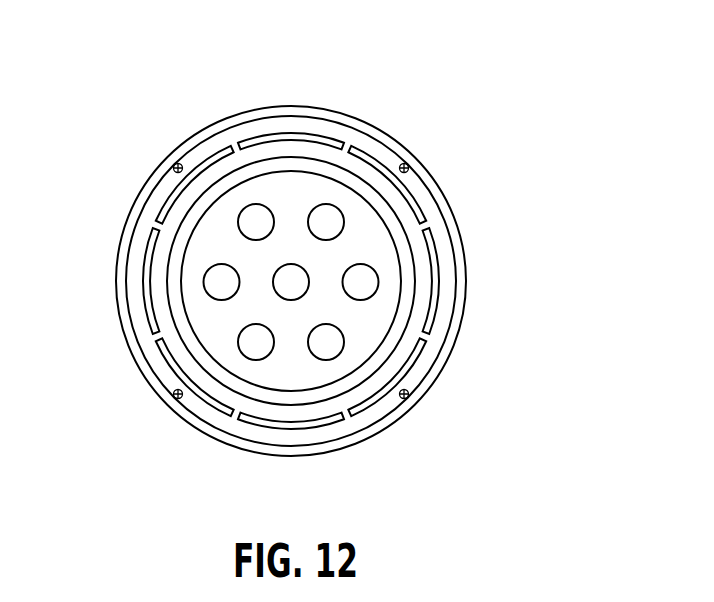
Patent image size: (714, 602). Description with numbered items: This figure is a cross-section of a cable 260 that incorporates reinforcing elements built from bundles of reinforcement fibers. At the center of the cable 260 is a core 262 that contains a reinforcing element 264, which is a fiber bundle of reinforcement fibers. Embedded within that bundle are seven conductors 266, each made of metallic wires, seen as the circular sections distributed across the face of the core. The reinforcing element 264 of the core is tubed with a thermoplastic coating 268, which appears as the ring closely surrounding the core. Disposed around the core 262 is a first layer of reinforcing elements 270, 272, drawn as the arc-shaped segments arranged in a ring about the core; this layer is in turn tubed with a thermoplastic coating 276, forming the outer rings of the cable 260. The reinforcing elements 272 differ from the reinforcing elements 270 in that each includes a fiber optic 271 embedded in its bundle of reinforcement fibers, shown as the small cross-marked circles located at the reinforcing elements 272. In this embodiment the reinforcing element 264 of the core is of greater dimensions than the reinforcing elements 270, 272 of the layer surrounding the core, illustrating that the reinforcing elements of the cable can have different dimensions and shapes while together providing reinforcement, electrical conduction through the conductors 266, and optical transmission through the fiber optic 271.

The cable 260 is at (368, 64).
The core 262 is at (223, 324).
The reinforcing element 264 is at (195, 307).
The conductors 266 is at (330, 222).
The thermoplastic coating 268 is at (205, 385).
The reinforcing elements 270 is at (270, 122).
The fiber optic 271 is at (174, 171).
The reinforcing elements 272 is at (193, 149).
The thermoplastic coating 276 is at (458, 245).